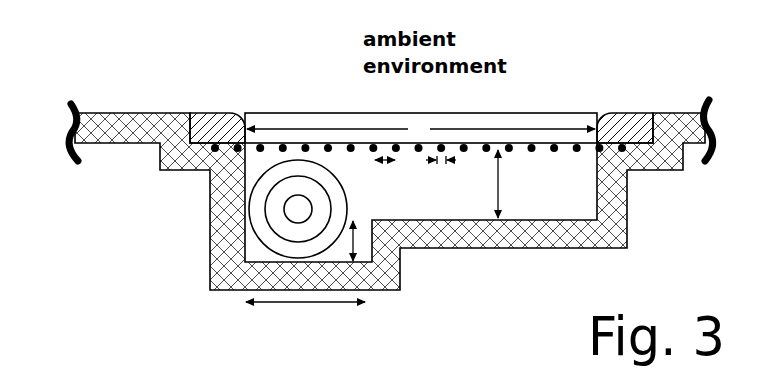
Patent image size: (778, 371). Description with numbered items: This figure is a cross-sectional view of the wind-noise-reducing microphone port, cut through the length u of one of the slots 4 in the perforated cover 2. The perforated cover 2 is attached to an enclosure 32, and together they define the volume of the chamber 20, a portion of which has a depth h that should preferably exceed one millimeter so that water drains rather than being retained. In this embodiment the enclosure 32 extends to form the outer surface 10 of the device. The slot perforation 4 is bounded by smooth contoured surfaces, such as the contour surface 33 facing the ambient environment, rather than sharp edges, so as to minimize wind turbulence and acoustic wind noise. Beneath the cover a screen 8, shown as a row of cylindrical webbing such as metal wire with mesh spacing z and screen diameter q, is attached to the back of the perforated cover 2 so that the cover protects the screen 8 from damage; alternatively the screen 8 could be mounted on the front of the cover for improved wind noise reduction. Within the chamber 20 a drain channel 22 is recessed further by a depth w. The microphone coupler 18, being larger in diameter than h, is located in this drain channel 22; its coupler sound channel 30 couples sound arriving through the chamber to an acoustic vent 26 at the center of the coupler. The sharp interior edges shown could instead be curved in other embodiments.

The outer surface 10 is at (117, 113).
The contour surface 33 is at (236, 113).
The perforated cover 2 is at (637, 108).
The slot perforation 4 is at (552, 117).
The screen 8 is at (530, 150).
The chamber 20 is at (548, 198).
The drain channel 22 is at (362, 250).
The enclosure 32 is at (227, 292).
The microphone coupler 18 is at (253, 212).
The coupler sound channel 30 is at (278, 226).
The acoustic vent 26 is at (300, 210).